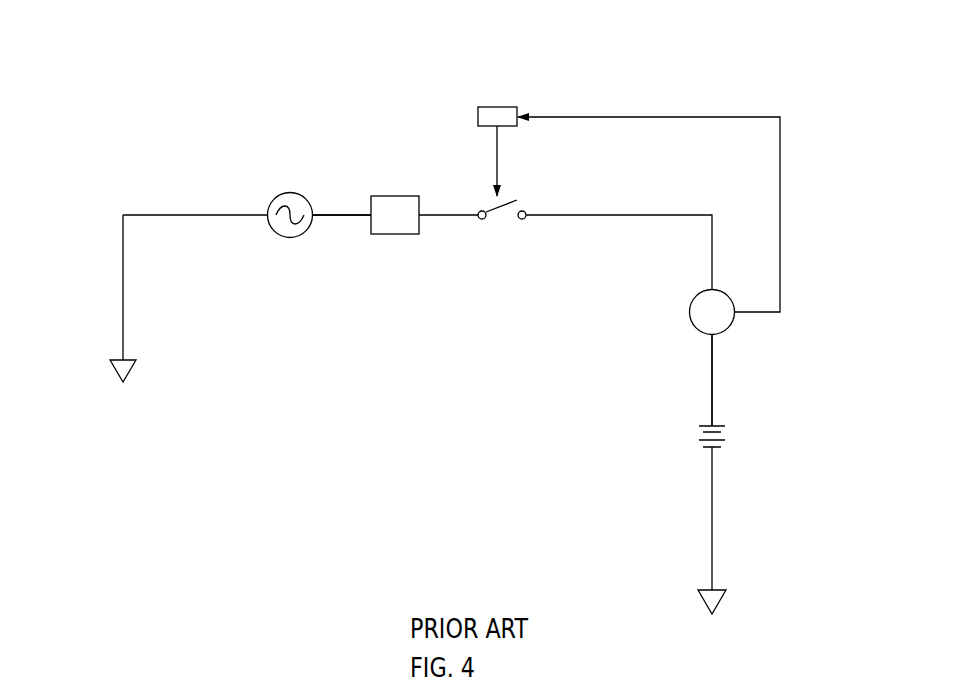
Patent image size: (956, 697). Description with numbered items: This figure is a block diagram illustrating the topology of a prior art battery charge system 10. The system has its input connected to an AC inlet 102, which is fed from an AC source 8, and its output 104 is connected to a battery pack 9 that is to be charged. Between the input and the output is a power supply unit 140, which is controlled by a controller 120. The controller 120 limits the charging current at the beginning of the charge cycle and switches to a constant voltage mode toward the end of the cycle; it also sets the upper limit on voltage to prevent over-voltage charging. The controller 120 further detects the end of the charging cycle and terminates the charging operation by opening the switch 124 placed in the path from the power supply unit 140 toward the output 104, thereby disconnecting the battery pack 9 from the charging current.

The AC power source 8 is at (281, 194).
The battery pack 9 is at (690, 438).
The prior art battery charge system 10 is at (327, 403).
The AC inlet 102 is at (352, 216).
The output 104 is at (712, 406).
The controller 120 is at (497, 107).
The switch 124 is at (494, 227).
The power supply unit 140 is at (414, 234).